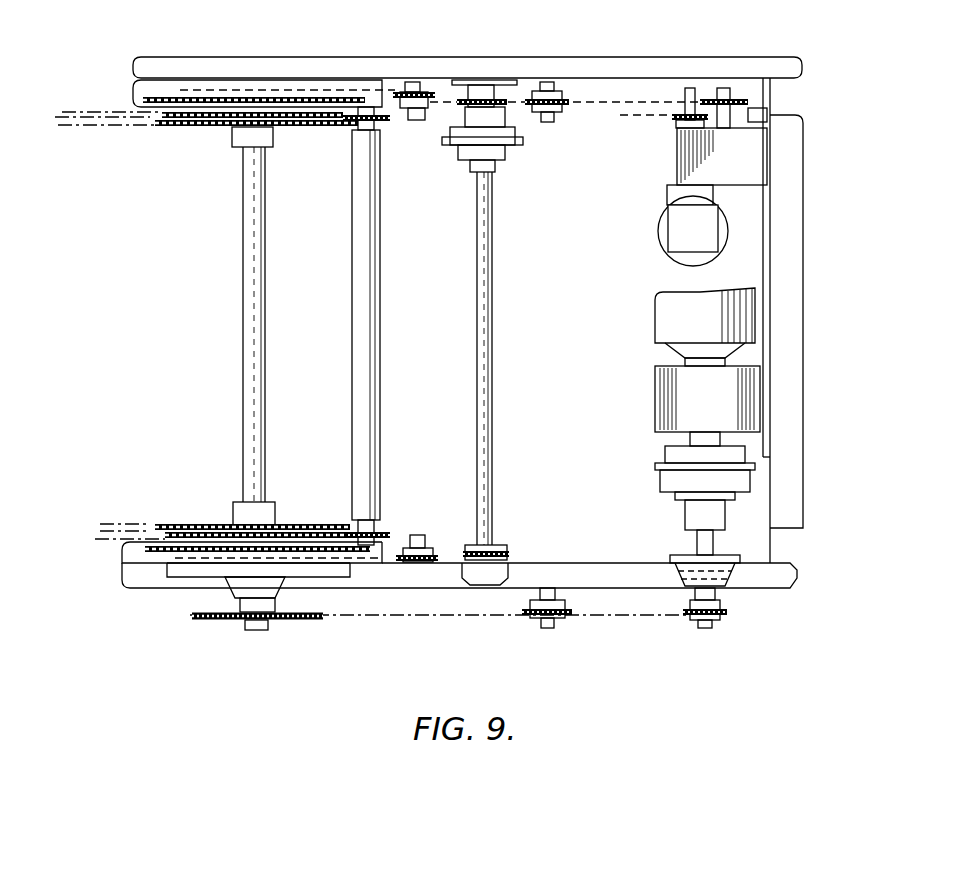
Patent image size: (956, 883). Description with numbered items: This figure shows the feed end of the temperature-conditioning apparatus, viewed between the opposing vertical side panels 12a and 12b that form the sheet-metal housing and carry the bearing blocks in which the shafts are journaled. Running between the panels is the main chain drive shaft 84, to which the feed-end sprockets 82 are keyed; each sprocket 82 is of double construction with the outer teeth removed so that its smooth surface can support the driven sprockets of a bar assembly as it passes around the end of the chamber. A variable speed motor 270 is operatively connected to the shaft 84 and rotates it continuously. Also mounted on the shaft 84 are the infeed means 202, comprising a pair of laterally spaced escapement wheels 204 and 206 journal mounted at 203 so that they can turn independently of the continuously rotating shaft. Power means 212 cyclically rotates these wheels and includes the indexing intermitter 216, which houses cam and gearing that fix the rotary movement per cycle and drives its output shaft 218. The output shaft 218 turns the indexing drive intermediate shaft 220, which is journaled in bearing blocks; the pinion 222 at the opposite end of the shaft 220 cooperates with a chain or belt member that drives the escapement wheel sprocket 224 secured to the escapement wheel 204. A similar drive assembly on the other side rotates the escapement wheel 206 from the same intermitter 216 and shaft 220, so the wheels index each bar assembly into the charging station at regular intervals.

The vertical side panel 12a is at (590, 590).
The vertical side panel 12b is at (558, 55).
The sprocket 82 is at (200, 524).
The chain drive shaft 84 is at (243, 336).
The infeed means 202 is at (615, 249).
The journal mounting 203 is at (283, 560).
The escapement wheel 204 is at (152, 554).
The escapement wheel 206 is at (157, 97).
The power means 212 is at (650, 161).
The intermitter 216 is at (742, 192).
The output shaft 218 is at (722, 130).
The indexing drive intermediate shaft 220 is at (477, 327).
The pinion 222 is at (507, 560).
The escapement wheel sprocket 224 is at (184, 562).
The variable speed motor 270 is at (663, 322).